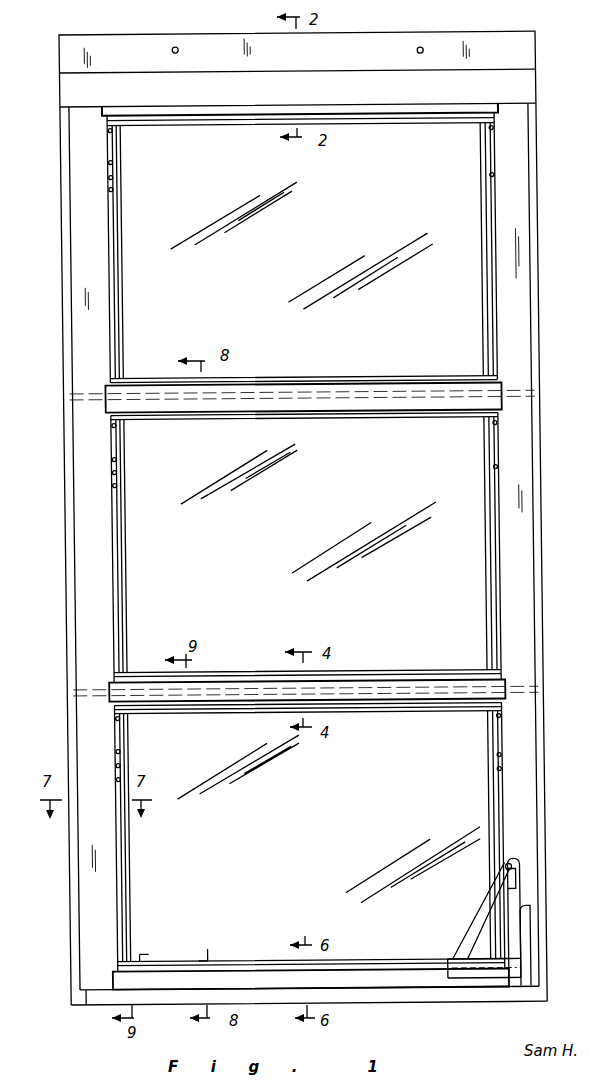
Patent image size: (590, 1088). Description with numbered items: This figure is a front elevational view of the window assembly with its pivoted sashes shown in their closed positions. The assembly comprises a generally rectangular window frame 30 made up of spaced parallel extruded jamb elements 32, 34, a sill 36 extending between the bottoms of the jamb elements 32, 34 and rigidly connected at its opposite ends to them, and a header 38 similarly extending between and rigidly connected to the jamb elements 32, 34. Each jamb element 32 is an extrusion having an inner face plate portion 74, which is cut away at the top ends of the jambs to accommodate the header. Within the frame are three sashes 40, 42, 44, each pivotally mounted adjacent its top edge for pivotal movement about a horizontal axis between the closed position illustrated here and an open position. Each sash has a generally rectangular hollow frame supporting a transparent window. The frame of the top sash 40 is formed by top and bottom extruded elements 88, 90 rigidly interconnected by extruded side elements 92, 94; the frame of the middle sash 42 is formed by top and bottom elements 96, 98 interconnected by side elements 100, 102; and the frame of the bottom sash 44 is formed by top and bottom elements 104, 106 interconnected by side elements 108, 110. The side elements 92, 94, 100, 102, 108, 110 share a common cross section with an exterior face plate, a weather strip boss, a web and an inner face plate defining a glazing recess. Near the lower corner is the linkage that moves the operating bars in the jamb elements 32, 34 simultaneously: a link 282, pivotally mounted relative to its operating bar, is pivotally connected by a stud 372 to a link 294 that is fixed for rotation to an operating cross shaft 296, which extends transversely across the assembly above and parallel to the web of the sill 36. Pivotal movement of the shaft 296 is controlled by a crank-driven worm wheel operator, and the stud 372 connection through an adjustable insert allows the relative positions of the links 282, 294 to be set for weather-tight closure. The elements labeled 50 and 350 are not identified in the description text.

The window frame 30 is at (300, 531).
The jamb element 32 is at (62, 386).
The jamb element 34 is at (542, 374).
The sill 36 is at (466, 992).
The header 38 is at (530, 52).
The top sash 40 is at (338, 258).
The sash 42 is at (342, 557).
The sash 44 is at (344, 846).
The balance mechanism 50 is at (175, 48).
The inner face plate portion 74 is at (500, 906).
The top extruded element 88 is at (371, 113).
The bottom extruded element 90 is at (348, 381).
The side extruded element 92 is at (118, 304).
The side extruded element 94 is at (500, 240).
The top element 96 is at (342, 420).
The bottom element 98 is at (368, 673).
The side element 100 is at (117, 589).
The side element 102 is at (500, 547).
The top element 104 is at (257, 708).
The bottom element 106 is at (252, 968).
The side element 108 is at (117, 885).
The side element 110 is at (500, 797).
The link 282 is at (518, 863).
The link 294 is at (514, 895).
The operating cross shaft 296 is at (469, 958).
The bracket 350 is at (490, 980).
The stud 372 is at (503, 876).